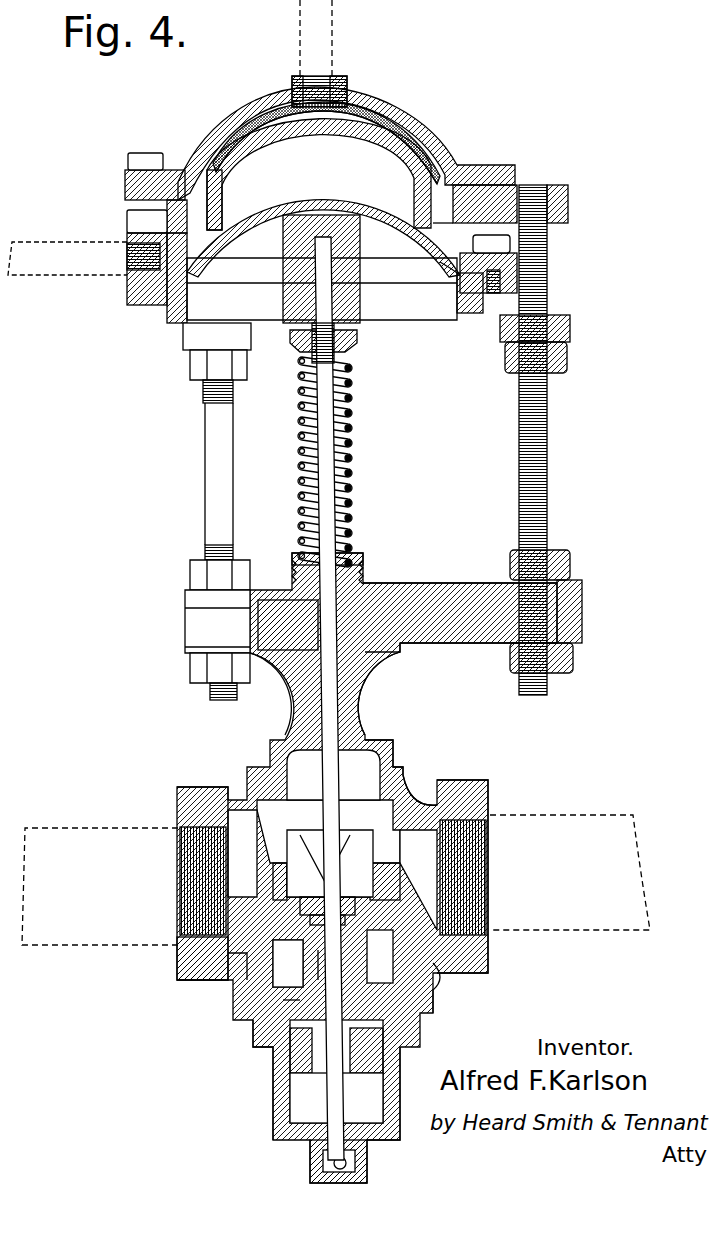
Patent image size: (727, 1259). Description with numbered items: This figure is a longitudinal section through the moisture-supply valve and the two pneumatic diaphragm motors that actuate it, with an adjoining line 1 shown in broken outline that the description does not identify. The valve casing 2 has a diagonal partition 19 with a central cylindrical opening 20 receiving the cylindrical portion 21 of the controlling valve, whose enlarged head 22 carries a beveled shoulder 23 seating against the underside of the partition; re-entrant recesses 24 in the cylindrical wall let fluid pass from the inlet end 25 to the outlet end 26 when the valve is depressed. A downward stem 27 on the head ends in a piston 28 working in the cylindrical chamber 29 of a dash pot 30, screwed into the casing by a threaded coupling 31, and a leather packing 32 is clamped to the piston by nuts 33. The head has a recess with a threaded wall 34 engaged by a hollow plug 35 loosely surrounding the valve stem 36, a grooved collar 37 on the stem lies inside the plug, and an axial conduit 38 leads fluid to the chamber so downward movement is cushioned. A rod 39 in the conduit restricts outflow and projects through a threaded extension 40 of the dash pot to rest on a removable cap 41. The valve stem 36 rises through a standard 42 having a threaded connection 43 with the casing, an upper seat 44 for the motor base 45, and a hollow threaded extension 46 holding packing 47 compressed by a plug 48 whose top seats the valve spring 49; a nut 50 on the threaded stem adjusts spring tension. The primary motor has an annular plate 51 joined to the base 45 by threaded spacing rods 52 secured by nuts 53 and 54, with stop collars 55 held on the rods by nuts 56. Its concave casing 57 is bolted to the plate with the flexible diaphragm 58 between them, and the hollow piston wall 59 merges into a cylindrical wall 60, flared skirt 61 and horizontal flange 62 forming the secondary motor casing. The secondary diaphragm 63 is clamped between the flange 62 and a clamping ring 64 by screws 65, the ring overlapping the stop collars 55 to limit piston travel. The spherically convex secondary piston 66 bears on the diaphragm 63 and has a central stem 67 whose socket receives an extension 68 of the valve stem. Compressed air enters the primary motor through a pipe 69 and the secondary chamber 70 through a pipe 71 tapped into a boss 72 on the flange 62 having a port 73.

The pipe line 1 is at (612, 814).
The valve casing 2 is at (470, 783).
The partition 19 is at (437, 872).
The central cylindrical opening 20 is at (380, 862).
The cylindrical portion 21 is at (298, 873).
The enlarged head 22 is at (287, 914).
The beveled shoulder 23 is at (283, 903).
The re-entrant recesses 24 is at (347, 857).
The inlet end 25 is at (470, 868).
The outlet end 26 is at (193, 857).
The stem 27 is at (290, 985).
The piston 28 is at (270, 1047).
The cylindrical chamber 29 is at (303, 1075).
The dash pot 30 is at (400, 1065).
The screw threaded coupling 31 is at (420, 975).
The flexible packing 32 is at (313, 1047).
The nut 33 is at (310, 1063).
The screw threaded wall 34 is at (312, 945).
The hollow plug 35 is at (305, 925).
The valve stem 36 is at (325, 818).
The collar 37 is at (330, 960).
The conduit 38 is at (293, 1007).
The rod 39 is at (337, 1092).
The screw threaded extension 40 is at (325, 1148).
The cap 41 is at (358, 1172).
The standard 42 is at (362, 718).
The screw threaded connection 43 is at (392, 777).
The seat 44 is at (403, 650).
The base 45 is at (430, 583).
The hollow screw threaded extension 46 is at (360, 583).
The packing 47 is at (307, 647).
The screw threaded plug 48 is at (351, 537).
The valve spring 49 is at (350, 492).
The nut 50 is at (357, 340).
The plate 51 is at (507, 193).
The spacing rods 52 is at (213, 448).
The nut 53 is at (572, 563).
The nut 54 is at (575, 662).
The stop collars 55 is at (571, 325).
The nuts 56 is at (570, 350).
The casing 57 is at (447, 132).
The flexible diaphragm 58 is at (413, 123).
The piston wall 59 is at (345, 130).
The peripheral cylindrical wall 60 is at (226, 192).
The outwardly flared skirt 61 is at (443, 248).
The horizontal flange 62 is at (520, 257).
The diaphragm 63 is at (447, 273).
The clamping ring 64 is at (480, 303).
The bolts or screws 65 is at (507, 283).
The piston 66 is at (352, 224).
The central stem 67 is at (353, 282).
The extension 68 is at (318, 268).
The conduit or pipe 69 is at (338, 46).
The chamber 70 is at (388, 120).
The conduit or pipe 71 is at (75, 246).
The boss 72 is at (140, 300).
The port 73 is at (170, 302).